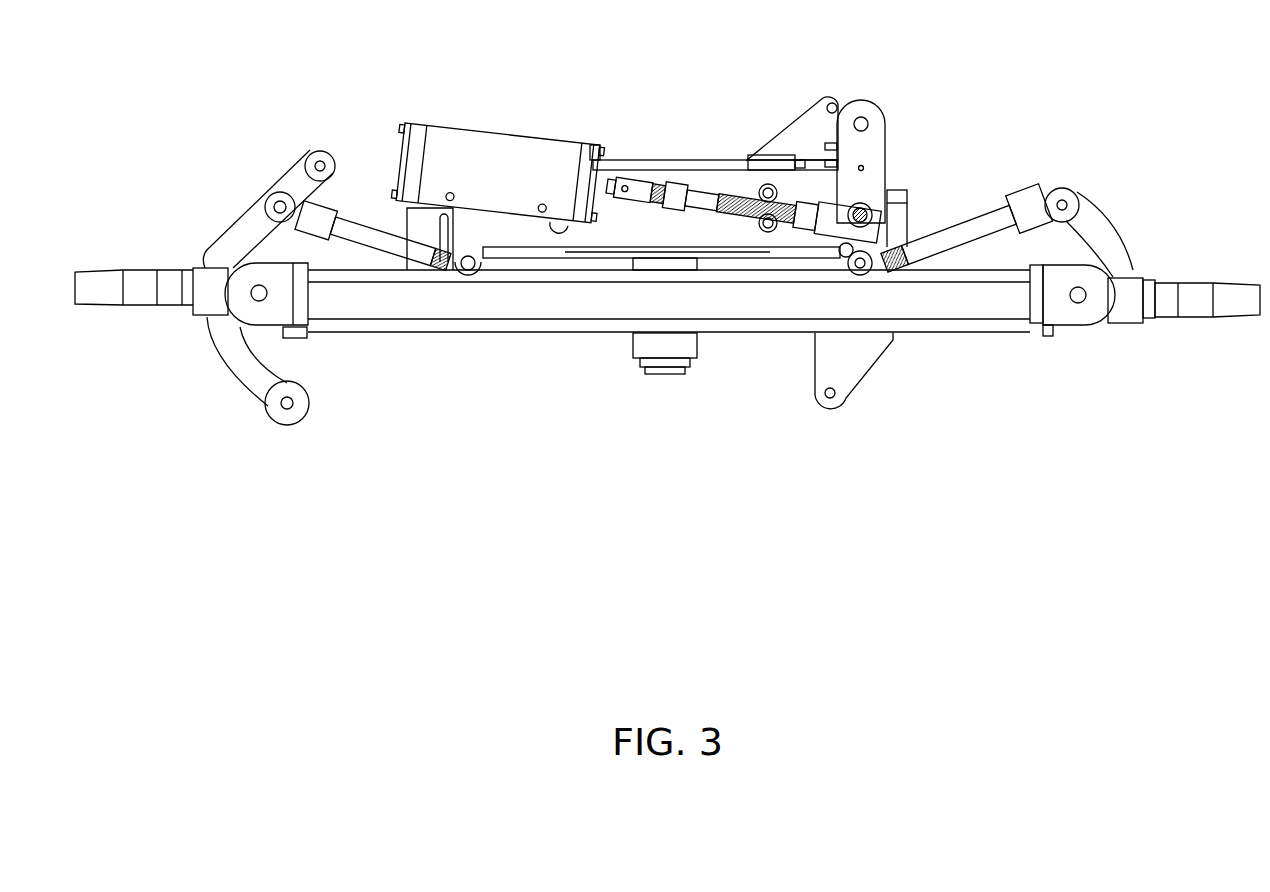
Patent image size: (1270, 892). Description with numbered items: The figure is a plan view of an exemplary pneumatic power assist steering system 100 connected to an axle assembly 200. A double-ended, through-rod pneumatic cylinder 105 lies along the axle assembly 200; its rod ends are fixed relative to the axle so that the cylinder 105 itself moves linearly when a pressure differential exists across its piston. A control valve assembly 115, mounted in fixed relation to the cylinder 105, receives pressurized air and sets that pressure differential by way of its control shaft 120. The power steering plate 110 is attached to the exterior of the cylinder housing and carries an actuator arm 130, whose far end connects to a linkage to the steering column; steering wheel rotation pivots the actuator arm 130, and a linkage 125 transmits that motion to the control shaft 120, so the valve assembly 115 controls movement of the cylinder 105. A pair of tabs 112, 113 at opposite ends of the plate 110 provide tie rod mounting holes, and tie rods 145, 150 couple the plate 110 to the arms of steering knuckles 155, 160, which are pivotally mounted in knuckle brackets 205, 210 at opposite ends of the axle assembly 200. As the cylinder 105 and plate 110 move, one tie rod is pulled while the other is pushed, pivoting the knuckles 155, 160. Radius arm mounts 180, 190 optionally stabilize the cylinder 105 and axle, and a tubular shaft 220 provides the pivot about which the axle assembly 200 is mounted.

The pneumatic power assist steering system 100 is at (667, 298).
The double-ended cylinder 105 is at (715, 160).
The power steering plate 110 is at (610, 232).
The tab 112 is at (460, 273).
The tab 113 is at (845, 245).
The control valve assembly 115 is at (525, 158).
The control shaft 120 is at (746, 157).
The linkage 125 is at (668, 193).
The actuator arm 130 is at (867, 133).
The tie rod 145 is at (960, 223).
The tie rod 150 is at (380, 220).
The steering knuckle 155 is at (1127, 287).
The steering knuckle 160 is at (205, 288).
The radius arm mount 180 is at (793, 133).
The radius arm mount 190 is at (848, 375).
The axle assembly 200 is at (967, 323).
The knuckle bracket 205 is at (1070, 322).
The knuckle bracket 210 is at (267, 323).
The tubular shaft 220 is at (668, 374).